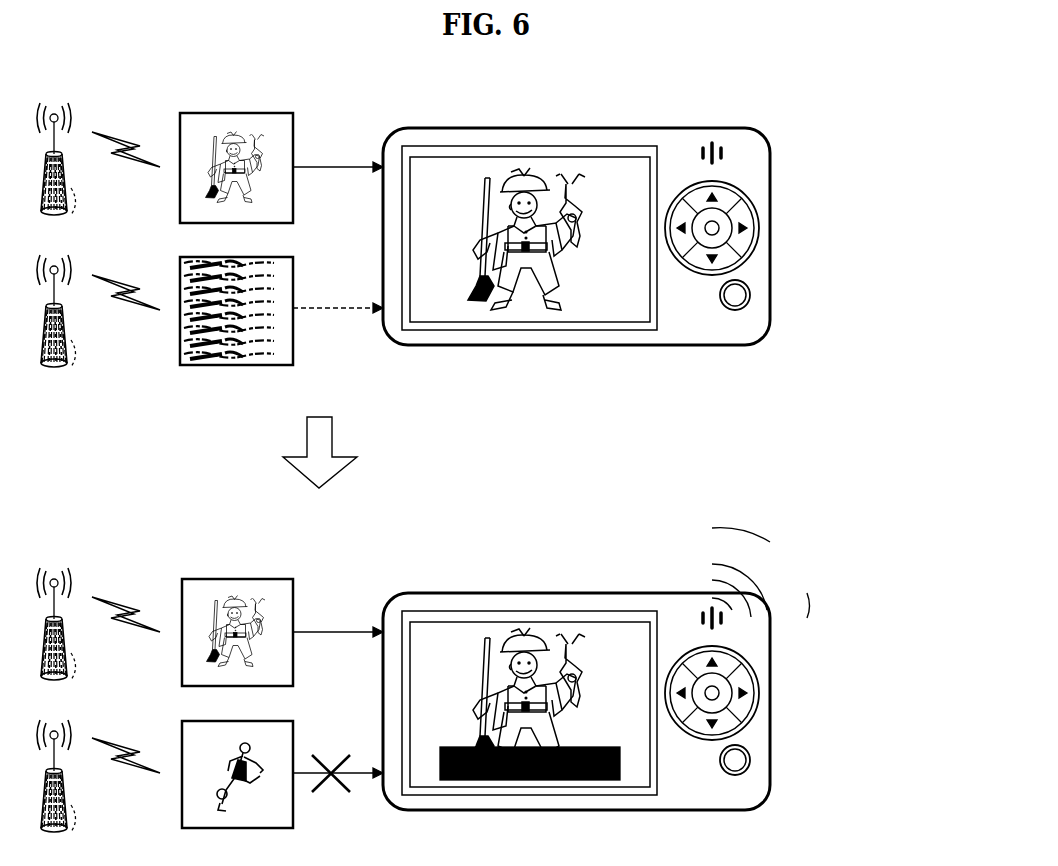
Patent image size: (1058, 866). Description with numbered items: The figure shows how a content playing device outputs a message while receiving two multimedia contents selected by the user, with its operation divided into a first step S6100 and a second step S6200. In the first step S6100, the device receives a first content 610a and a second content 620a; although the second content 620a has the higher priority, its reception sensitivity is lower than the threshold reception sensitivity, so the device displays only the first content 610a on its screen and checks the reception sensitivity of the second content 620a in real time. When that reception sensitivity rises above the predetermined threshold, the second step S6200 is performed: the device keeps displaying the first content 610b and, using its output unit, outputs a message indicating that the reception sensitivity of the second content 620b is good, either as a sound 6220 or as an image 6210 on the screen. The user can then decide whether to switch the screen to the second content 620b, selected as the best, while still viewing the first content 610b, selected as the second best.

The first content 610a is at (275, 113).
The second content 620a is at (275, 257).
The first content 610b is at (275, 579).
The second content 620b is at (275, 721).
The message (image) 6210 is at (622, 760).
The message (sound) 6220 is at (878, 541).
The first step S6100 is at (848, 212).
The second step S6200 is at (840, 675).